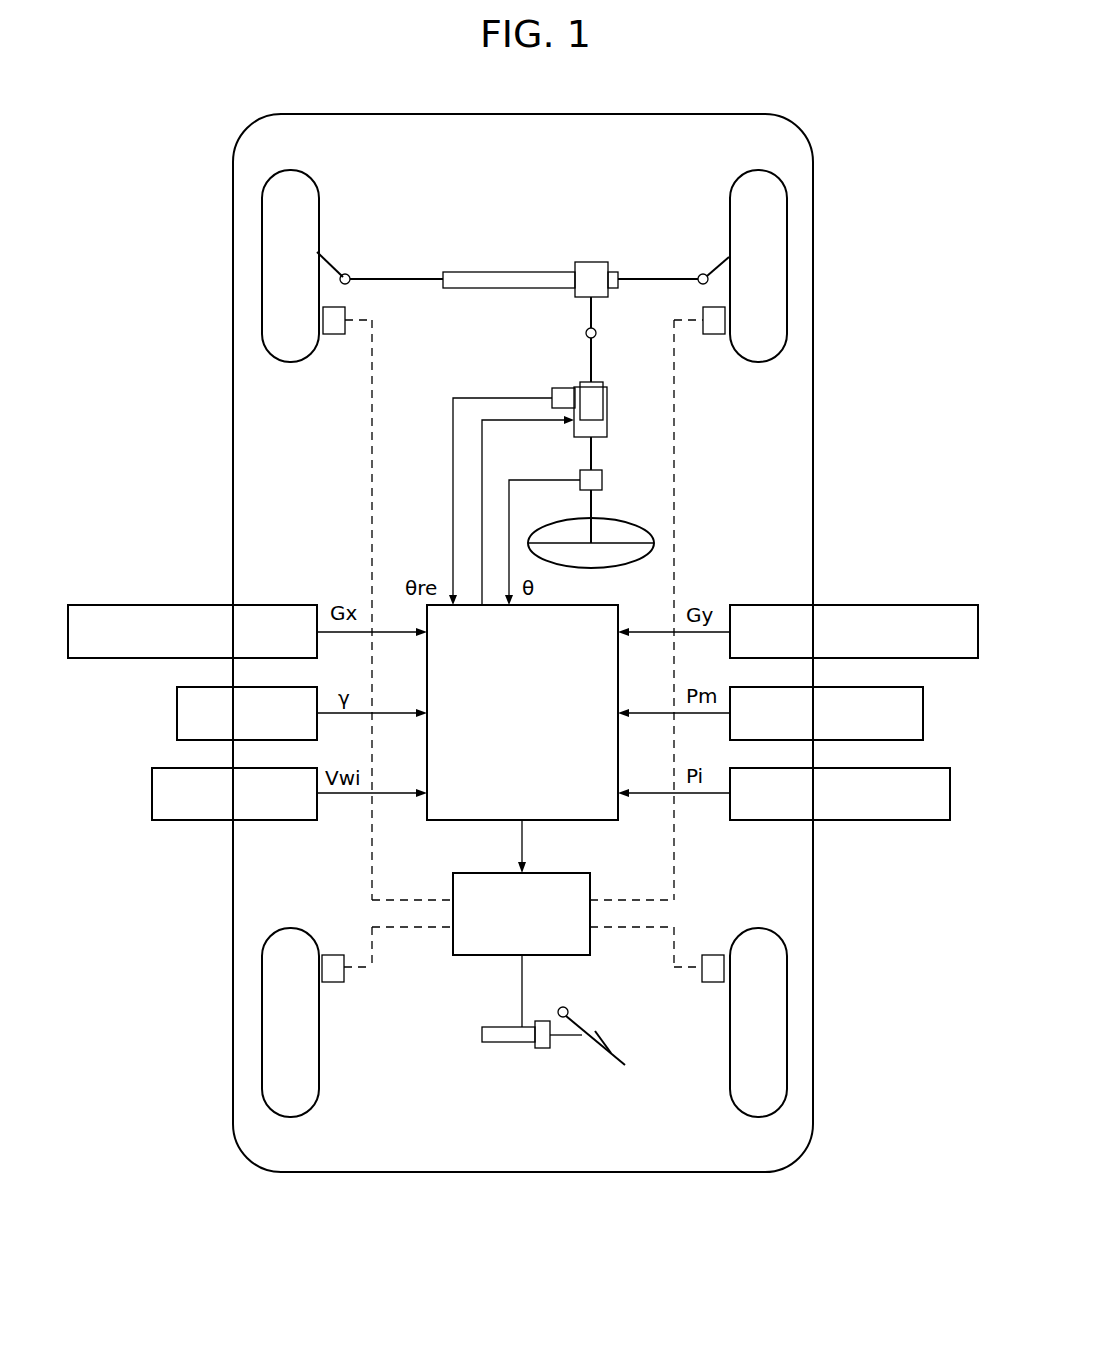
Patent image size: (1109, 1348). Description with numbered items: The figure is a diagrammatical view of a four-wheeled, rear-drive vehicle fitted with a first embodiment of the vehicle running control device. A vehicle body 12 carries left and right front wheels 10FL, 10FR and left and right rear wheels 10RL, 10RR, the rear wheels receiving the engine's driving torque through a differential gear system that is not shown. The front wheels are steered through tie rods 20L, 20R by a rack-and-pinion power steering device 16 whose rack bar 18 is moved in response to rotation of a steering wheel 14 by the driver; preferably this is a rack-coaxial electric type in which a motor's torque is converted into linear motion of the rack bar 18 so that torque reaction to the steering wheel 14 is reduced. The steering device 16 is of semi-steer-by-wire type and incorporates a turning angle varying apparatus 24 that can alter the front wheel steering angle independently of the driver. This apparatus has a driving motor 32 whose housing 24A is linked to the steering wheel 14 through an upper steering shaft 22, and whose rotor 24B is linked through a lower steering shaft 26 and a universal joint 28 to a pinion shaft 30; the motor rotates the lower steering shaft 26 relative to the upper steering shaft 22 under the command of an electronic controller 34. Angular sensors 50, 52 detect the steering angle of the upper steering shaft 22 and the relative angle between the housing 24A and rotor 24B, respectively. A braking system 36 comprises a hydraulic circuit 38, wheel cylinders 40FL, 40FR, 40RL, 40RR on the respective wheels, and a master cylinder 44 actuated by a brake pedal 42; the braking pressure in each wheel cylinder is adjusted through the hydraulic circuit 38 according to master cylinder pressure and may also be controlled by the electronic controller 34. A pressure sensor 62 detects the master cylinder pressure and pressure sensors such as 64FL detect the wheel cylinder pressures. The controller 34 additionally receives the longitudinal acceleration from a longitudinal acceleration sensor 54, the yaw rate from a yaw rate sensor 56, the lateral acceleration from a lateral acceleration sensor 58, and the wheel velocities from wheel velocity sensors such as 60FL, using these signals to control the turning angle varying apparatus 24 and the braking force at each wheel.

The left front wheel 10FL is at (262, 280).
The right front wheel 10FR is at (787, 280).
The left rear wheel 10RL is at (262, 1028).
The right rear wheel 10RR is at (787, 1030).
The vehicle body 12 is at (813, 462).
The steering wheel 14 is at (596, 567).
The steering device 16 is at (523, 246).
The rack bar 18 is at (400, 278).
The left tie rod 20L is at (332, 262).
The right tie rod 20R is at (723, 258).
The upper steering shaft 22 is at (586, 510).
The turning angle varying apparatus 24 is at (590, 406).
The housing 24A is at (610, 417).
The rotor 24B is at (596, 397).
The lower steering shaft 26 is at (595, 347).
The universal joint 28 is at (587, 334).
The pinion shaft 30 is at (595, 312).
The driving motor 32 is at (582, 377).
The electronic controller 34 is at (535, 750).
The braking system 36 is at (513, 1024).
The hydraulic circuit 38 is at (535, 948).
The front left wheel cylinder 40FL is at (333, 334).
The front right wheel cylinder 40FR is at (713, 334).
The rear left wheel cylinder 40RL is at (333, 982).
The rear right wheel cylinder 40RR is at (712, 982).
The brake pedal 42 is at (603, 1034).
The master cylinder 44 is at (503, 1026).
The angular sensor 50 is at (604, 480).
The angular sensor 52 is at (560, 385).
The longitudinal acceleration sensor 54 is at (265, 603).
The yaw rate sensor 56 is at (760, 603).
The lateral acceleration sensor 58 is at (176, 727).
The wheel velocity sensor 60FL is at (283, 820).
The pressure sensor 62 is at (925, 727).
The pressure sensor 64FL is at (758, 820).